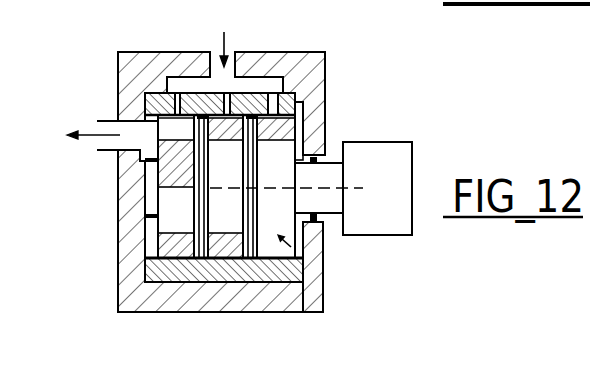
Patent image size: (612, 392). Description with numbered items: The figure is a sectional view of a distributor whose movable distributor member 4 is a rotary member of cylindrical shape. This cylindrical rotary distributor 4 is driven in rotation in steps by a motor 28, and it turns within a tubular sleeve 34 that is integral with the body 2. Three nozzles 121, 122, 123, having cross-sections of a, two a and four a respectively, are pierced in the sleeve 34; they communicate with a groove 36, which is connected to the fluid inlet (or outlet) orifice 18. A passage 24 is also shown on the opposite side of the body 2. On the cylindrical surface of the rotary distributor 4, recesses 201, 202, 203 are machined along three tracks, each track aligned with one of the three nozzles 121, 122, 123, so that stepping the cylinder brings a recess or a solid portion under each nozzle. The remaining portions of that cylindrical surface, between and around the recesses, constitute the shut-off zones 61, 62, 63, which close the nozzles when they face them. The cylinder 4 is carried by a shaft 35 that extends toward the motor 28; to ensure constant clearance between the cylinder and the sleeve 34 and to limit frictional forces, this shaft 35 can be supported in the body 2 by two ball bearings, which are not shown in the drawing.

The body 2 is at (305, 83).
The movable distributor member 4 is at (323, 308).
The fluid inlet (or outlet) orifice 18 is at (233, 65).
The outlet 24 is at (107, 143).
The motor 28 is at (372, 218).
The tubular sleeve 34 is at (158, 270).
The shaft 35 is at (321, 202).
The groove 36 is at (256, 86).
The nozzle 121 is at (147, 92).
The nozzle 122 is at (213, 92).
The nozzle 123 is at (272, 92).
The shut-off zone 61 is at (140, 210).
The shut-off zone 62 is at (218, 262).
The shut-off zone 63 is at (301, 118).
The recess 201 is at (145, 258).
The recess 202 is at (197, 215).
The recess 203 is at (268, 222).